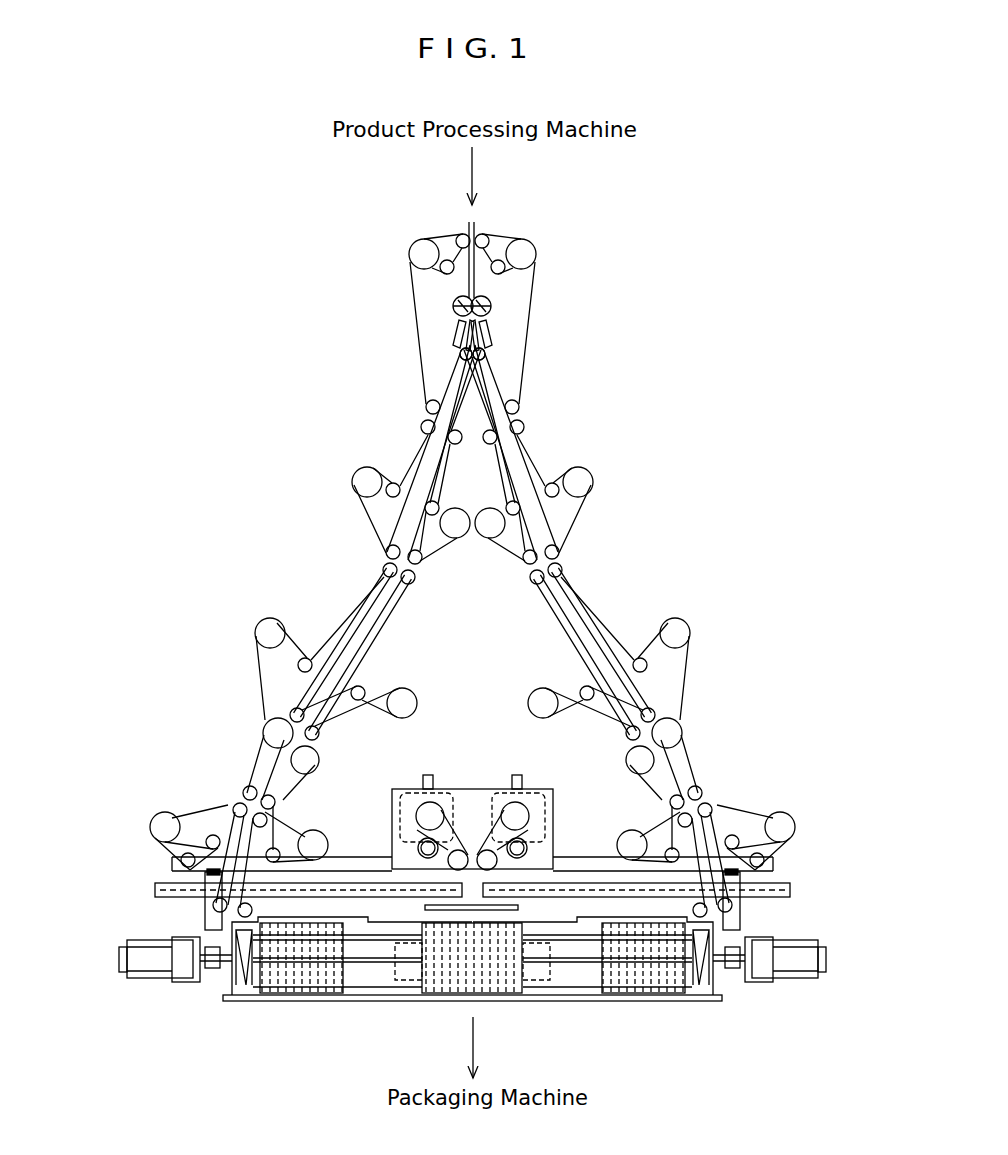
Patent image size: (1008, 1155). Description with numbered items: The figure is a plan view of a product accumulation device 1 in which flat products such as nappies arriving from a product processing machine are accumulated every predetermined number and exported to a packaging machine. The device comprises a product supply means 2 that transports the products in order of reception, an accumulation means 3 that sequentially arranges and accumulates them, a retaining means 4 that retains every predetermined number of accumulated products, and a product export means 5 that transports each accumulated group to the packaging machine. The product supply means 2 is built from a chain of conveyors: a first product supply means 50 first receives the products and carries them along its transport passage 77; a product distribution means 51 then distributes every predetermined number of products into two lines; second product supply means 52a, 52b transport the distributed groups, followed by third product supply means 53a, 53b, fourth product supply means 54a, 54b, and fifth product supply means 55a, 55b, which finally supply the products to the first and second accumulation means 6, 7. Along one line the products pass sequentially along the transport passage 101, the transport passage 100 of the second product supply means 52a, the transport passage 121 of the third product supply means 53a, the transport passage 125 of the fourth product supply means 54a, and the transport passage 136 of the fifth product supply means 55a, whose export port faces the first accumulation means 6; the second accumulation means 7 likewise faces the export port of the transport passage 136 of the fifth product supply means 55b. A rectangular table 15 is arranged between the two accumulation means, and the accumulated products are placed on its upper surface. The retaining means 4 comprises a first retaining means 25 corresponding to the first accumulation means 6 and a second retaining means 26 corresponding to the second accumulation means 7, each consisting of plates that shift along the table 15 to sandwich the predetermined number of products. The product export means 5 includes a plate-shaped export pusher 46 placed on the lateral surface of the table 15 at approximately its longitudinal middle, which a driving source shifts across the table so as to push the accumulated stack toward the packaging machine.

The product accumulation device 1 is at (718, 358).
The product supply means 2 is at (618, 371).
The accumulation means 3 is at (472, 1019).
The first accumulation means 6 is at (227, 1013).
The second accumulation means 7 is at (714, 1013).
The retaining means 4 is at (472, 1008).
The first retaining means 25 is at (253, 1013).
The second retaining means 26 is at (692, 1013).
The product export means 5 is at (504, 983).
The export pusher 46 is at (494, 913).
The table 15 is at (405, 1000).
The first product supply means 50 is at (548, 283).
The product distribution means 51 is at (504, 312).
The second product supply means 52a is at (403, 434).
The second product supply means 52b is at (542, 433).
The third product supply means 53a is at (320, 611).
The third product supply means 53b is at (625, 611).
The fourth product supply means 54a is at (244, 740).
The fourth product supply means 54b is at (701, 737).
The fifth product supply means 55a is at (197, 814).
The fifth product supply means 55b is at (728, 806).
The transport passage 77 is at (475, 225).
The transport passage 100 is at (427, 463).
The transport passage 101 is at (457, 372).
The transport passage 121 is at (378, 597).
The transport passage 125 is at (277, 773).
The transport passage 136 is at (247, 837).